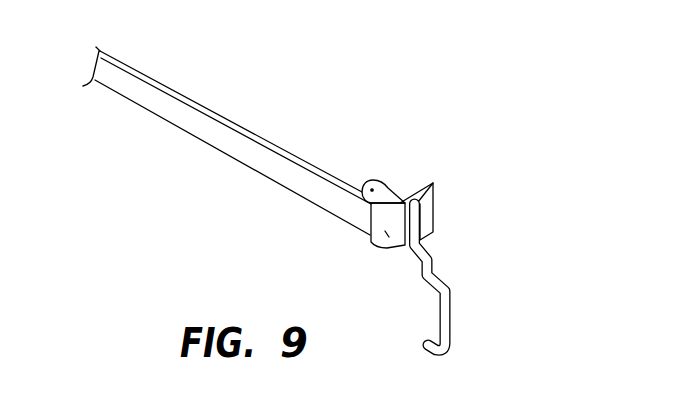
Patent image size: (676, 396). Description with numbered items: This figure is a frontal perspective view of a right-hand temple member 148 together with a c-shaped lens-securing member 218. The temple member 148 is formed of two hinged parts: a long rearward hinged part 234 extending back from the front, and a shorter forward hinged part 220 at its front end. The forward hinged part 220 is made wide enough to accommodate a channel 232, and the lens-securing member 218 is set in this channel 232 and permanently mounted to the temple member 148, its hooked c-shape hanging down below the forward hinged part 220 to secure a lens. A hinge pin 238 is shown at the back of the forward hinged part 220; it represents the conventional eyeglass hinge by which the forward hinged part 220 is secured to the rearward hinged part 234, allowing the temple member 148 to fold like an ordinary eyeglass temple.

The temple member 148 is at (293, 192).
The rearward hinged part 234 is at (277, 147).
The forward hinged part 220 is at (392, 240).
The hinge pin 238 is at (385, 181).
The channel 232 is at (433, 184).
The lens-securing member 218 is at (453, 322).